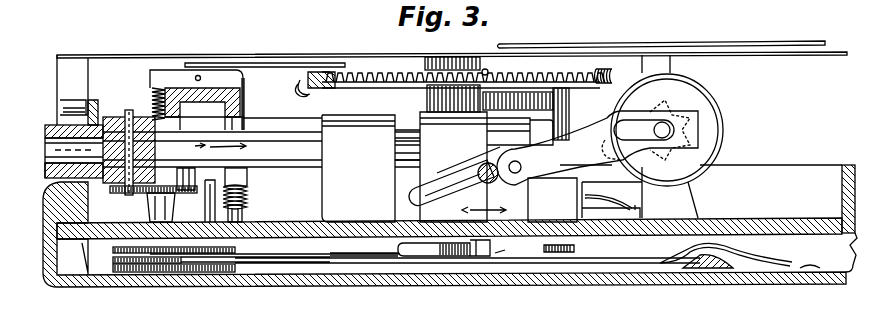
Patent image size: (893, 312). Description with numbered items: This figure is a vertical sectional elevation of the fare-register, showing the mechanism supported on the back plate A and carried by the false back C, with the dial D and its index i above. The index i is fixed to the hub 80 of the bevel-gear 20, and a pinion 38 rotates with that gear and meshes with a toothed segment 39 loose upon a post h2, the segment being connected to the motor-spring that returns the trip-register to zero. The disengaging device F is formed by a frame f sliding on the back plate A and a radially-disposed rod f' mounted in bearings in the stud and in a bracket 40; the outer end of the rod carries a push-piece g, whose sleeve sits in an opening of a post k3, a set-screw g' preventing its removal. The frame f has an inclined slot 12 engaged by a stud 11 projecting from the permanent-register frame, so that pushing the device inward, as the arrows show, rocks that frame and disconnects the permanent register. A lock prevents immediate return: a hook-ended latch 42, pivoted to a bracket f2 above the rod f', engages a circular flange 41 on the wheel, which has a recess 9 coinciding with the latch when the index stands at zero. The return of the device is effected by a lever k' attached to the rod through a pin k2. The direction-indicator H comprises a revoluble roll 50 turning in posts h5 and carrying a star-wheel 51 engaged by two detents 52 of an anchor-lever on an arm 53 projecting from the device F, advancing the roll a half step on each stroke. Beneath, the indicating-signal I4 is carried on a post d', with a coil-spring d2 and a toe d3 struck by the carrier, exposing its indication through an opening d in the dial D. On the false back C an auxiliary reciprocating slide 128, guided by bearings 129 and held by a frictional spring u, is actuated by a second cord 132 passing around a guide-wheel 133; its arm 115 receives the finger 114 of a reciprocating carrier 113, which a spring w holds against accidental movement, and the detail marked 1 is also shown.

The false back C is at (84, 280).
The back plate A is at (806, 220).
The dial D is at (822, 68).
The index i is at (790, 44).
The opening d is at (265, 50).
The set-screw g' is at (82, 99).
The push-piece g is at (72, 137).
The post k3 is at (73, 107).
The rod f' is at (169, 158).
The disengaging device F is at (261, 141).
The pin k2 is at (128, 110).
The lever k' is at (147, 204).
The hook-ended latch 42 is at (283, 70).
The bracket f2 is at (204, 109).
The post d' is at (257, 104).
The coil-spring d2 is at (249, 197).
The toe d3 is at (245, 216).
The bracket 40 is at (371, 168).
The pinion 38 is at (427, 102).
The bevel-gear 20 is at (378, 68).
The hub 80 is at (452, 64).
The pin 1 is at (488, 73).
The circular flange 41 is at (336, 72).
The arm I4 is at (306, 70).
The recess 9 is at (304, 95).
The post h2 is at (572, 100).
The toothed segment 39 is at (572, 102).
The arm 53 is at (567, 148).
The detents 52 is at (700, 120).
The star-wheel 51 is at (655, 108).
The revoluble roll 50 is at (720, 148).
The direction-indicator H is at (734, 92).
The posts h5 is at (667, 62).
The pin or stud 11 is at (492, 163).
The inclined slot 12 is at (450, 193).
The frame f is at (492, 200).
The spring w is at (608, 195).
The reciprocating carrier 113 is at (612, 201).
The guide-wheel 133 is at (217, 272).
The second cord 132 is at (305, 258).
The finger 114 is at (480, 240).
The arm 115 is at (515, 249).
The auxiliary reciprocating slide 128 is at (722, 294).
The bearings 129 is at (576, 251).
The frictional spring u is at (745, 253).